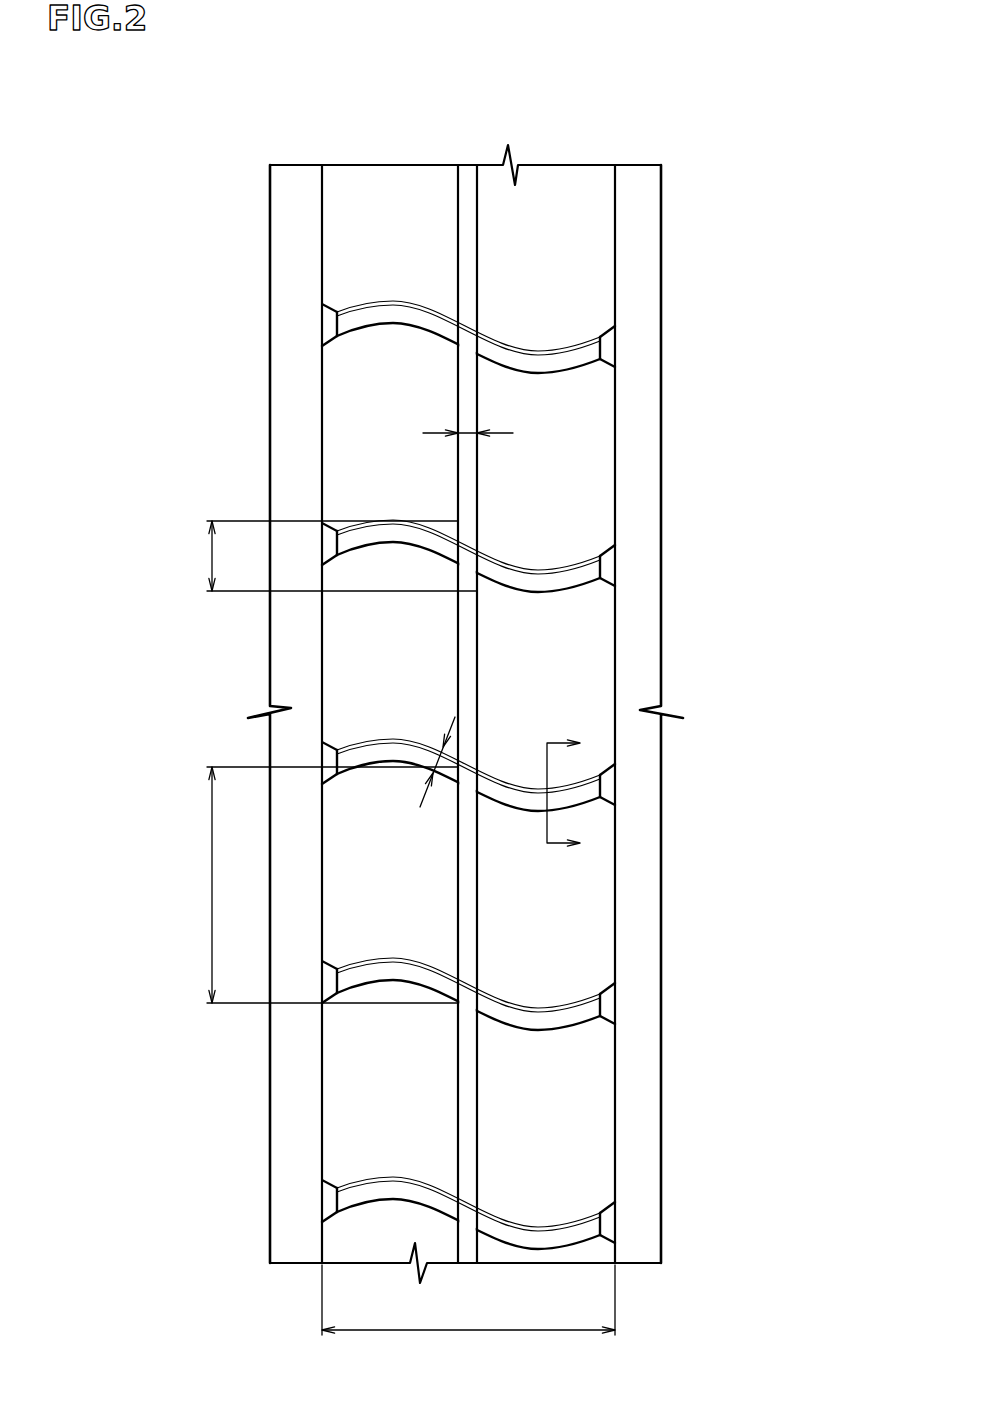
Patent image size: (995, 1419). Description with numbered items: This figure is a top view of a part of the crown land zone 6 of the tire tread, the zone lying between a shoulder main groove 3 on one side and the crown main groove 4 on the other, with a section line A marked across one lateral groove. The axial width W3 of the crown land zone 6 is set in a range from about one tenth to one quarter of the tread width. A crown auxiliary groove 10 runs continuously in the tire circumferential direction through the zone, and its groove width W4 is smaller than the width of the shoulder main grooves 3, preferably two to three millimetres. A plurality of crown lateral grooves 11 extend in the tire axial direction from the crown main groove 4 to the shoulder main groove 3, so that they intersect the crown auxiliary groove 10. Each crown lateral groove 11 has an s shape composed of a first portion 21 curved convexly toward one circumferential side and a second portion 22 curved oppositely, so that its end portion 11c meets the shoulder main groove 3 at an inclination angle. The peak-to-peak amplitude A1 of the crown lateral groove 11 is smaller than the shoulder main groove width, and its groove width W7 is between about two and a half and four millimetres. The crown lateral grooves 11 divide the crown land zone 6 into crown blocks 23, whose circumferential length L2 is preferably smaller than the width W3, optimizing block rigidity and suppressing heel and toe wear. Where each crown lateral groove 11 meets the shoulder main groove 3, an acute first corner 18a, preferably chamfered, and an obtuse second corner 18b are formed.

The shoulder main groove 3 is at (298, 195).
The crown main groove 4 is at (633, 205).
The crown land zone 6 is at (404, 195).
The crown auxiliary groove 10 is at (467, 195).
The crown lateral groove 11 is at (522, 351).
The end portion 11c is at (340, 1205).
The first corner 18a is at (330, 305).
The second corner 18b is at (329, 354).
The first portion 21 is at (536, 574).
The second portion 22 is at (408, 542).
The crown block 23 is at (536, 662).
The width of crown land zone W3 is at (468, 1300).
The groove width of crown auxiliary groove W4 is at (467, 430).
The groove width of crown lateral groove W7 is at (440, 757).
The peak-to-peak amplitude A1 is at (342, 556).
The circumferential length of crown block L2 is at (332, 885).
The section line A- A is at (576, 796).